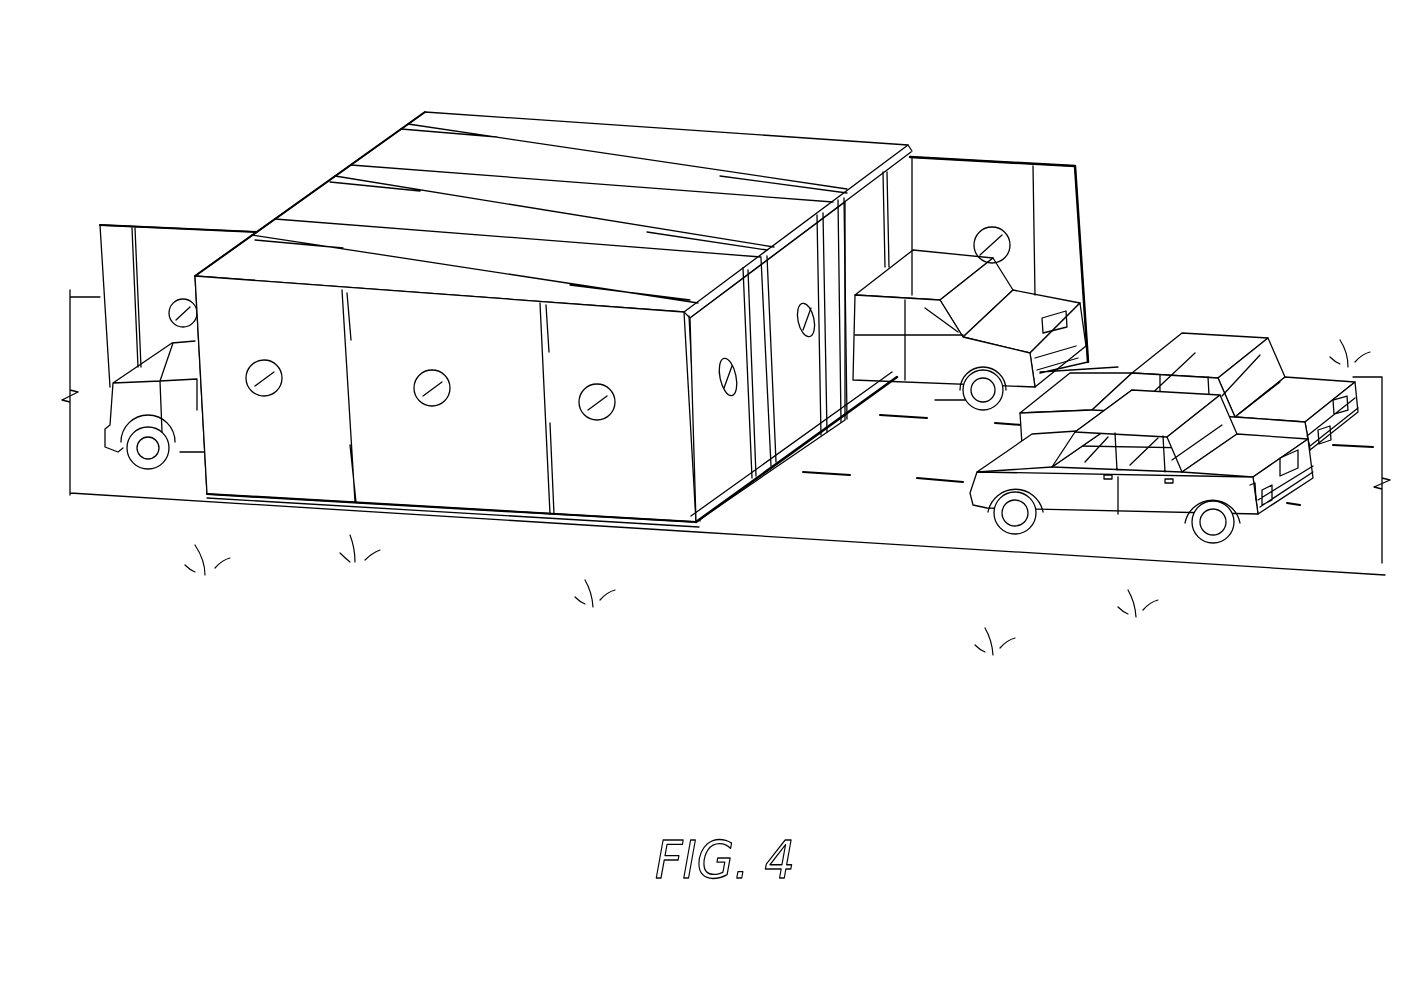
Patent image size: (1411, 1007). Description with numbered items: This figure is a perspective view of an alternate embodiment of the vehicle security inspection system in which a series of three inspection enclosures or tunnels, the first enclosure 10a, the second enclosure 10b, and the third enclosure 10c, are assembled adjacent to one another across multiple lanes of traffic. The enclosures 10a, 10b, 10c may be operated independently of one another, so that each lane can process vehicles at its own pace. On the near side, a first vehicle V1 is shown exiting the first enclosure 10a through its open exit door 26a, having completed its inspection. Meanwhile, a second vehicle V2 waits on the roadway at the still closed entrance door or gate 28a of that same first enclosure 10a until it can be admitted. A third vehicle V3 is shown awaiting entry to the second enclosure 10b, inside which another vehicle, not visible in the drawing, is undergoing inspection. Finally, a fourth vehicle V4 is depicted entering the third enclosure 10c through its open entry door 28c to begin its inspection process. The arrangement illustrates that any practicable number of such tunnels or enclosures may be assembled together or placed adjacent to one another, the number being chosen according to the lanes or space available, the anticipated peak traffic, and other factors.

The first enclosure 10a is at (470, 512).
The second enclosure 10b is at (307, 193).
The third enclosure 10c is at (700, 130).
The exit door 26a is at (130, 227).
The entrance door 28a is at (742, 498).
The entry door 28c is at (1007, 157).
The first vehicle V1 is at (112, 455).
The second vehicle V2 is at (1062, 525).
The third vehicle V3 is at (1238, 333).
The fourth vehicle V4 is at (935, 385).